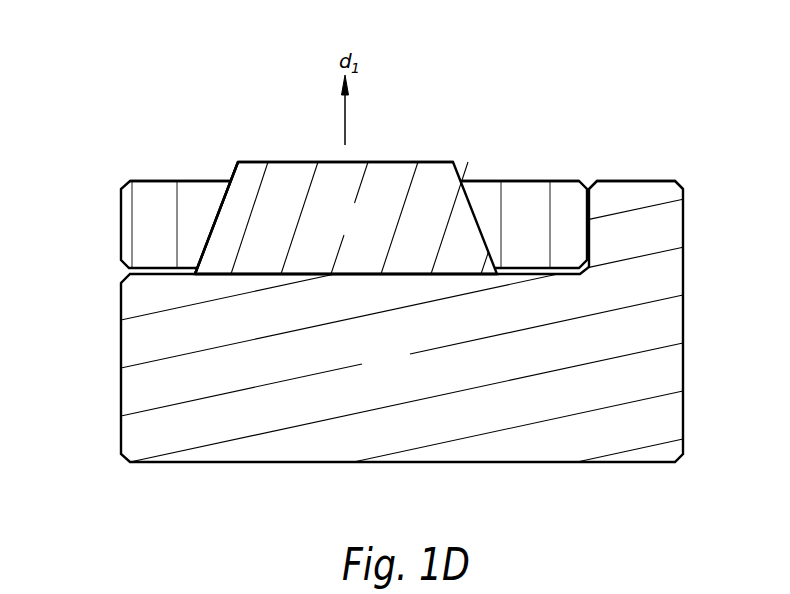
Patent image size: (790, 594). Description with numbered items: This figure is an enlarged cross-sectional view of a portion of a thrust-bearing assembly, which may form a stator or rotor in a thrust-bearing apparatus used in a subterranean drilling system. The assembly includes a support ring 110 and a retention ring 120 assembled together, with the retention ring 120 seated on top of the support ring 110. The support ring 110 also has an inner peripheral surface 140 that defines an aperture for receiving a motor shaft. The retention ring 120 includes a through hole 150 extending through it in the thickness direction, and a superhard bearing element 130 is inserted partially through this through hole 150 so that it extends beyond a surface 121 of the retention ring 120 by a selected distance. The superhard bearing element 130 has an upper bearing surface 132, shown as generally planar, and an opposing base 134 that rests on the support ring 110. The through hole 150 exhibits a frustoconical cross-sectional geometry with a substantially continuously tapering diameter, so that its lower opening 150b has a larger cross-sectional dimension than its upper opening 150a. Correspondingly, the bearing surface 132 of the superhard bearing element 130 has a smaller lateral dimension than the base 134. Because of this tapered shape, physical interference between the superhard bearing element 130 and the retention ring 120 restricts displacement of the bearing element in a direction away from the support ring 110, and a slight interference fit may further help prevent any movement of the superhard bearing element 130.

The support ring 110 is at (406, 370).
The retention ring 120 is at (137, 207).
The surface of the retention ring 121 is at (158, 181).
The superhard bearing element 130 is at (362, 230).
The upper bearing surface 132 is at (402, 162).
The base 134 is at (343, 274).
The inner peripheral surface 140 is at (638, 181).
The through hole 150 is at (222, 237).
The upper opening 150a is at (229, 181).
The lower opening 150b is at (193, 270).